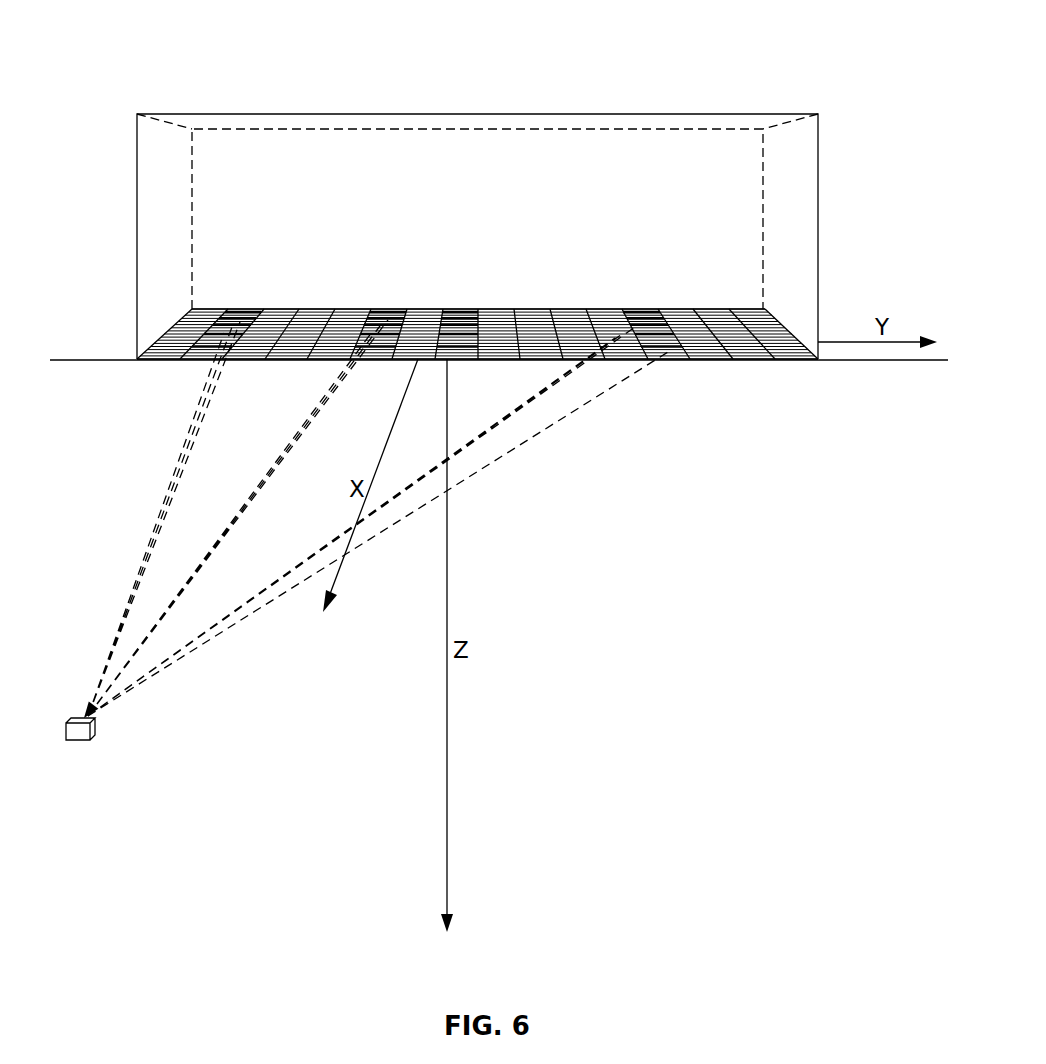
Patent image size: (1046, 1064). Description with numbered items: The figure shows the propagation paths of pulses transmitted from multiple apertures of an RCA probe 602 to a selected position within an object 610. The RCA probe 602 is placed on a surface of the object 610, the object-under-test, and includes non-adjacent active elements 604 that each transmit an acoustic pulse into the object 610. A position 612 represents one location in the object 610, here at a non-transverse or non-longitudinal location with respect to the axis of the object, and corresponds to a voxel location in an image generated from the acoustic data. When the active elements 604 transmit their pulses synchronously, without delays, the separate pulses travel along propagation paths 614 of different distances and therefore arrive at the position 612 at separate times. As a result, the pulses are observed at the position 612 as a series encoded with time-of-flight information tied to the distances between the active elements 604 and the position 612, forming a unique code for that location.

The RCA probe 602 is at (681, 113).
The active elements 604 is at (390, 309).
The object 610 is at (888, 362).
The position 612 is at (78, 742).
The propagation paths 614 is at (474, 504).